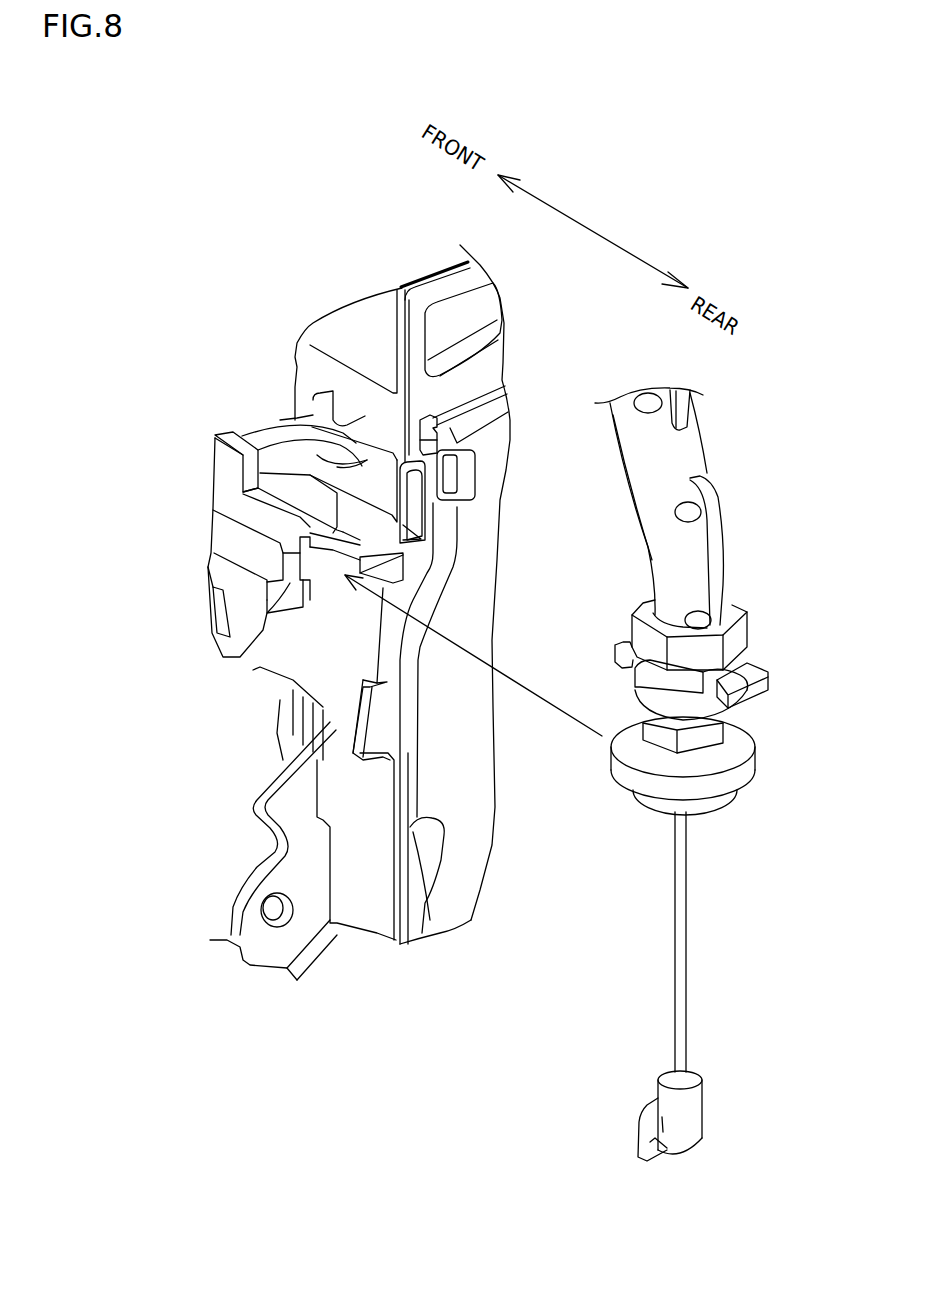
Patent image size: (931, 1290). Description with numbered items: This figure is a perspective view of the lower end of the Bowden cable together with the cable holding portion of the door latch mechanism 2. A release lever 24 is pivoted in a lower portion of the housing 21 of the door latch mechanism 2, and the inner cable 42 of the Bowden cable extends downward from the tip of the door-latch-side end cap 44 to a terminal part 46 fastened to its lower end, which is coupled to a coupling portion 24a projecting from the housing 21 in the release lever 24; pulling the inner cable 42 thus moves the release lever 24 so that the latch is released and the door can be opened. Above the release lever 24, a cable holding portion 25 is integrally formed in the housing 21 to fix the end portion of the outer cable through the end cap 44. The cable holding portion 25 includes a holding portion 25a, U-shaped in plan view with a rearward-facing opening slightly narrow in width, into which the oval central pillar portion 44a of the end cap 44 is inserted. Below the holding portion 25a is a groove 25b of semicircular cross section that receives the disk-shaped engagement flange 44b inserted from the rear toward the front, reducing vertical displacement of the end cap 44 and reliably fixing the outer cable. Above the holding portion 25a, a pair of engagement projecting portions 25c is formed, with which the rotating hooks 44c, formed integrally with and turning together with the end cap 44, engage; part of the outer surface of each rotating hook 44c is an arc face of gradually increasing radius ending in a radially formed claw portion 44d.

The door latch mechanism 2 is at (330, 312).
The housing 21 is at (423, 282).
The release lever 24 is at (240, 893).
The coupling portion 24a is at (282, 915).
The cable holding portion 25 is at (221, 657).
The holding portion 25a is at (347, 533).
The groove 25b is at (303, 607).
The engagement projecting portion 25c is at (340, 460).
The inner cable 42 is at (688, 975).
The door-latch-side end cap 44 is at (705, 447).
The central pillar portion 44a is at (707, 740).
The engagement flange 44b is at (728, 785).
The rotating hook 44c is at (630, 641).
The claw portion 44d is at (720, 664).
The terminal part 46 is at (638, 1135).